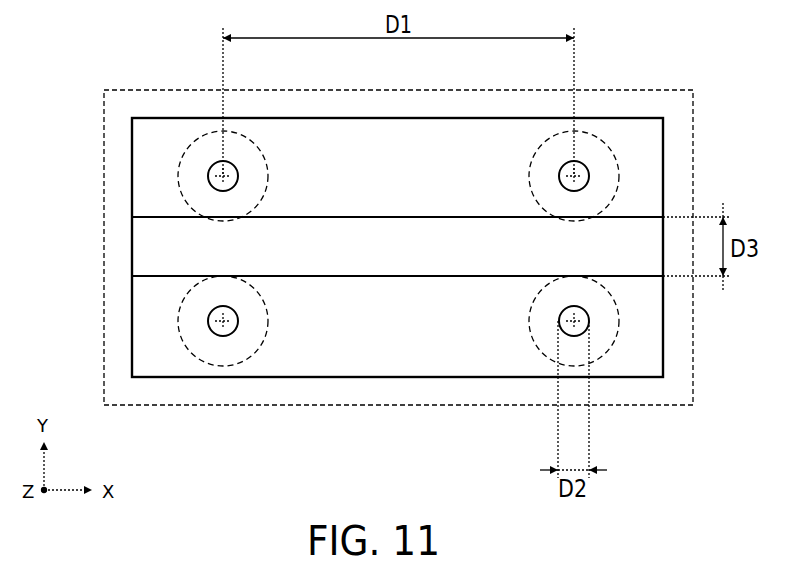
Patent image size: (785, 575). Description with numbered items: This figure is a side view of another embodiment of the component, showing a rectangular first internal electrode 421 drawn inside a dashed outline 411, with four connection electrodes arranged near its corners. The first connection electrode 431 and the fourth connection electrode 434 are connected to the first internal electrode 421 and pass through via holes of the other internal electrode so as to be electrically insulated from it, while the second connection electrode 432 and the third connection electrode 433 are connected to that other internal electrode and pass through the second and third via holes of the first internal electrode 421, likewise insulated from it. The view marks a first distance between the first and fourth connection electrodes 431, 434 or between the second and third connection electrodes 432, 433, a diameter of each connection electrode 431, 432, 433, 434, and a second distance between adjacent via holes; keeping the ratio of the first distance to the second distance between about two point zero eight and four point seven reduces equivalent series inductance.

The base member 411 is at (343, 388).
The first internal electrode 421 is at (420, 357).
The first connection electrode 431 is at (208, 322).
The second connection electrode 432 is at (208, 174).
The third connection electrode 433 is at (589, 172).
The fourth connection electrode 434 is at (589, 322).